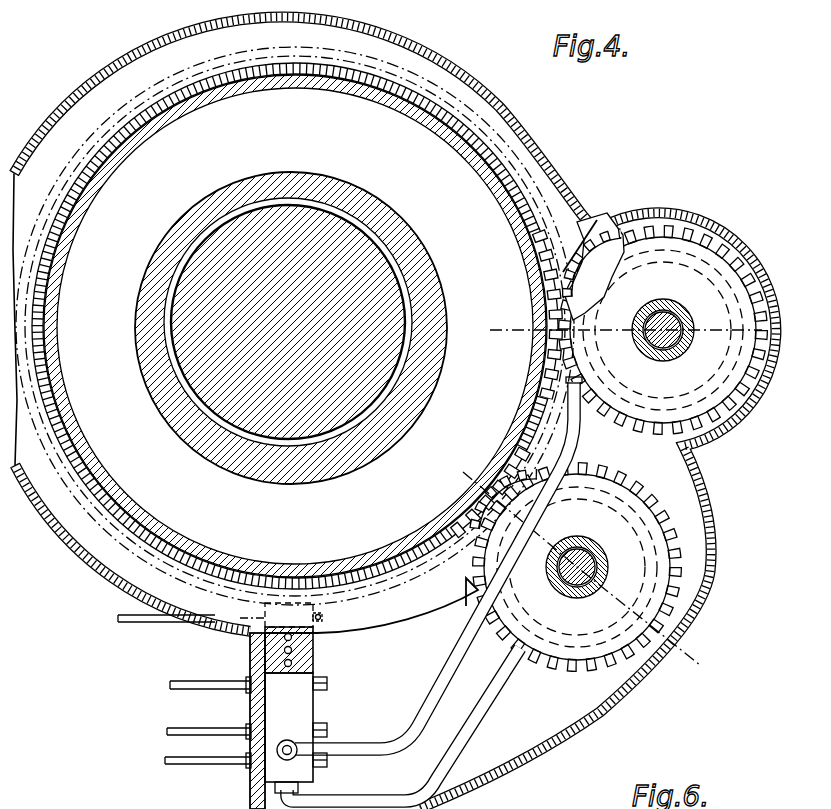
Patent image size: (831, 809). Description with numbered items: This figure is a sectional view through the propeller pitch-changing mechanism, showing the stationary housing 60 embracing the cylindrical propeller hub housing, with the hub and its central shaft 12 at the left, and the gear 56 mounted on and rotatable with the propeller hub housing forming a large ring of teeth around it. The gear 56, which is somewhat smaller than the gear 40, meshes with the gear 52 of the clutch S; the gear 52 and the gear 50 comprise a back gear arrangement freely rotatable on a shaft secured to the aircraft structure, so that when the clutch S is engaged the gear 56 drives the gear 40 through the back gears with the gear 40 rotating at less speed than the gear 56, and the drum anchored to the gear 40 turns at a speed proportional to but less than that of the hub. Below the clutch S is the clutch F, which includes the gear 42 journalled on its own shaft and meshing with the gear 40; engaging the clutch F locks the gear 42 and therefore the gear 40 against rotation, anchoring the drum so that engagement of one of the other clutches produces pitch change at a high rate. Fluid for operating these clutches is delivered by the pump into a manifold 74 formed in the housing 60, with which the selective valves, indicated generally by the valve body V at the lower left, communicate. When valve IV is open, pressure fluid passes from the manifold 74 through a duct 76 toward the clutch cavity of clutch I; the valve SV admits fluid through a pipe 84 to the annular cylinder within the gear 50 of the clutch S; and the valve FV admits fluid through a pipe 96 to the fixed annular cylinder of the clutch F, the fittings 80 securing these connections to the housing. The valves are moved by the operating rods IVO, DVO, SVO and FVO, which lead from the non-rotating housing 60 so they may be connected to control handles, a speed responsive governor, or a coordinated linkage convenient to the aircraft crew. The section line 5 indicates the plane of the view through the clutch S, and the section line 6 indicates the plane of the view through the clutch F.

The shaft hub 12 is at (370, 275).
The gear 40 is at (556, 245).
The gear 42 is at (640, 483).
The gear 50 is at (596, 258).
The gear 52 is at (698, 220).
The gear 56 is at (537, 223).
The stationary housing 60 is at (597, 733).
The manifold 74 is at (313, 653).
The duct 76 is at (317, 633).
The bolts 80 is at (317, 663).
The pipe 84 is at (447, 677).
The pipe 96 is at (410, 792).
The section line 5- 5 is at (512, 296).
The section line 6- 6 is at (488, 446).
The clutch S is at (695, 373).
The clutch F is at (585, 523).
The valve V is at (289, 733).
The valve operating means IVO is at (133, 623).
The valve operating means DVO is at (175, 688).
The valve operating means SVO is at (168, 732).
The valve operating means FVO is at (178, 765).